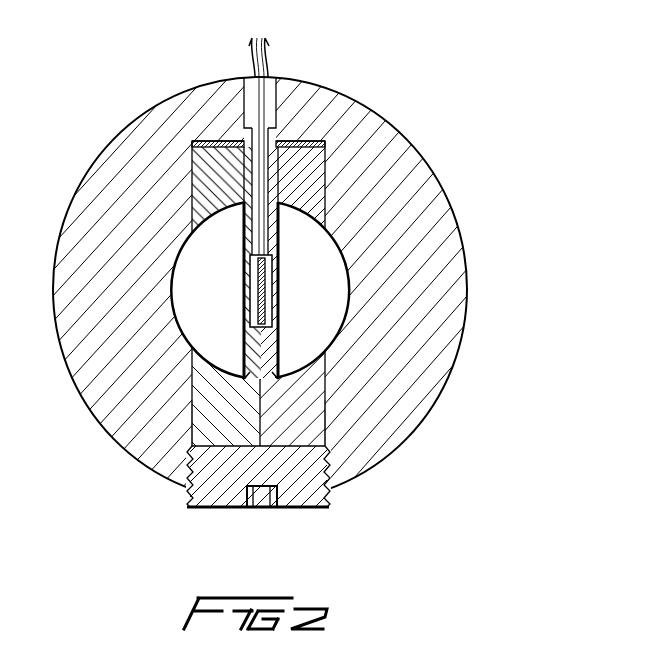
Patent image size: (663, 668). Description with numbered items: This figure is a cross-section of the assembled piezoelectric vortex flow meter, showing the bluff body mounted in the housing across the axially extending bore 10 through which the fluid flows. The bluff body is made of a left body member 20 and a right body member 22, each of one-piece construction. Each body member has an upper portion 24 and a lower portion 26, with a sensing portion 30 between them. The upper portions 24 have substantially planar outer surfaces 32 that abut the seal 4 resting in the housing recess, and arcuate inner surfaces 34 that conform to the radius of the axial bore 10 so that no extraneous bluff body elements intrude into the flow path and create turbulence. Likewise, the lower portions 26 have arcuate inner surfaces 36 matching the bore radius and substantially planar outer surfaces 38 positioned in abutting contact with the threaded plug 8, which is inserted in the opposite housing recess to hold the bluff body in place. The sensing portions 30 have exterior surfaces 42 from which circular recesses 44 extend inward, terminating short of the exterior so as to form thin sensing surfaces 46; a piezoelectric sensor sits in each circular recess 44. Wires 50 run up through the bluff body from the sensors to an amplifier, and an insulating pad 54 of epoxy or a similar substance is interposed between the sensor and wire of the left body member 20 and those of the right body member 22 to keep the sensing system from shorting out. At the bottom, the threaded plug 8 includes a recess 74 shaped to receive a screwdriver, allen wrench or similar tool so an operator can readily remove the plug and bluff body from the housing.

The seal 4 is at (192, 141).
The threaded plug 8 is at (306, 495).
The axially extending bore 10 is at (340, 306).
The left body member 20 is at (217, 119).
The right body member 22 is at (306, 129).
The upper portion 24 is at (323, 163).
The lower portion 26 is at (195, 400).
The sensing portion 30 is at (212, 261).
The outer surface 32 is at (324, 144).
The inner surface 34 is at (322, 224).
The inner surface 36 is at (233, 377).
The outer surface 38 is at (322, 442).
The exterior surface 42 is at (243, 240).
The circular recess 44 is at (258, 297).
The sensing surface 46 is at (250, 276).
The wires 50 is at (261, 58).
The insulating pad 54 is at (262, 305).
The recess 74 is at (258, 498).